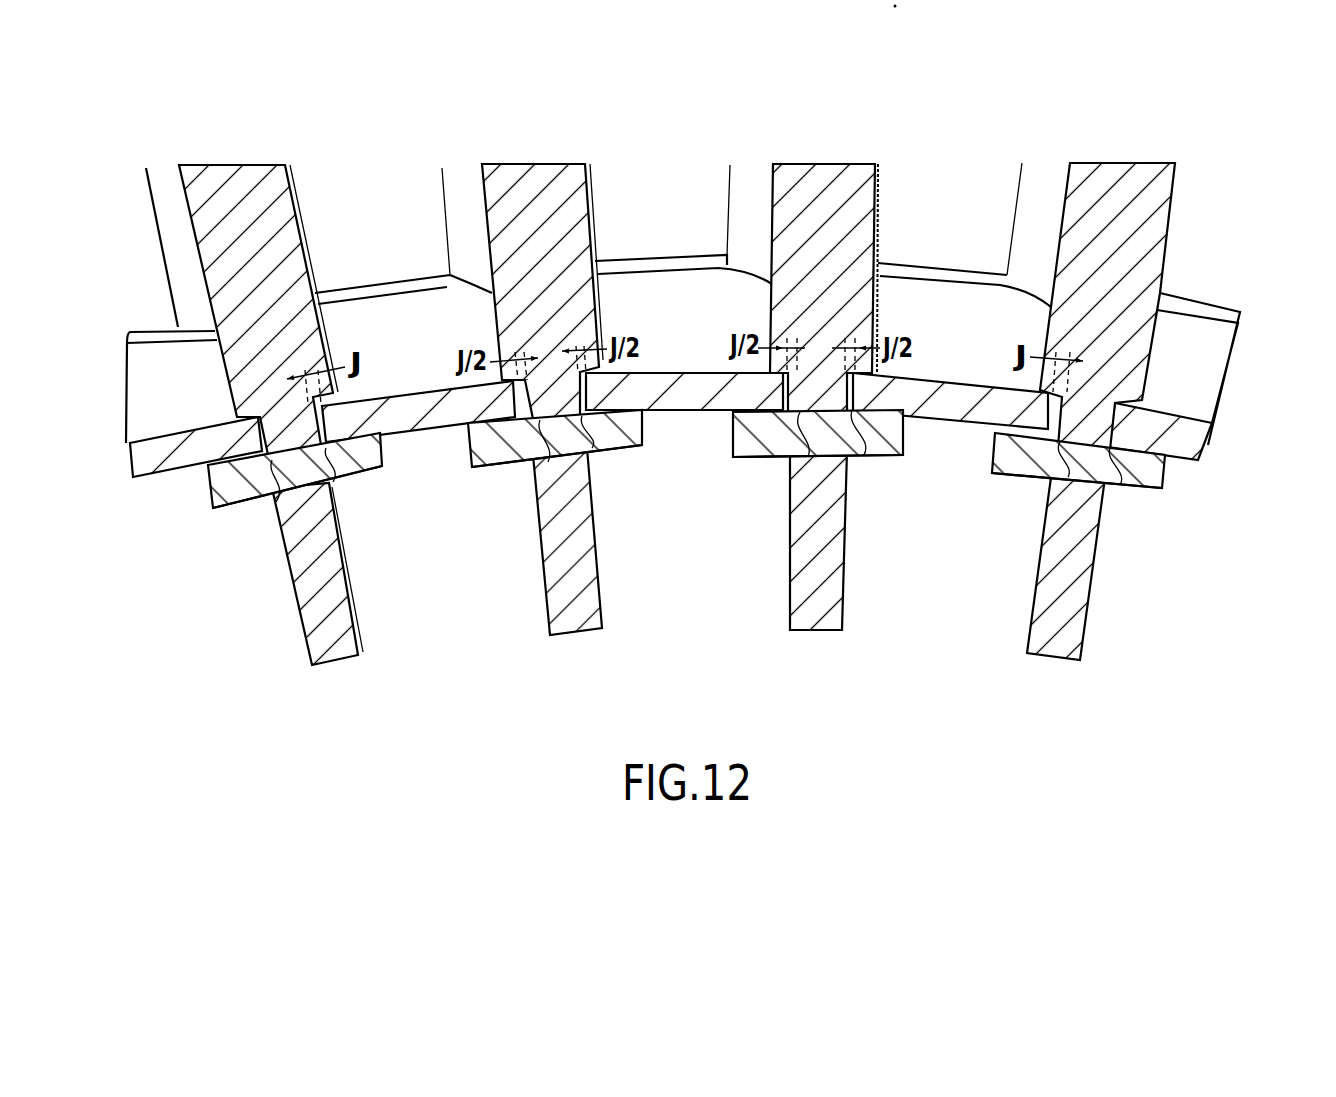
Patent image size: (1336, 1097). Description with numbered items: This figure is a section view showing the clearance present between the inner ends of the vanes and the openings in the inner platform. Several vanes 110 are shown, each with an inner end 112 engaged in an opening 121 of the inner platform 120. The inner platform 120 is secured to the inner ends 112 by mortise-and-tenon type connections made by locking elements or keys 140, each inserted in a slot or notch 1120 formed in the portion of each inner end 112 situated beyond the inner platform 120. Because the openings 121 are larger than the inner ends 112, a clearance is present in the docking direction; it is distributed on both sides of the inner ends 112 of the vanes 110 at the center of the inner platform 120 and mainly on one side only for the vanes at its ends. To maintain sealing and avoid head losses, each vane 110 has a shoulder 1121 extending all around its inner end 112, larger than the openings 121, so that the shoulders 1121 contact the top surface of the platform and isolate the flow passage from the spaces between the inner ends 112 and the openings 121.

The vane 110 is at (457, 195).
The inner end 112 is at (343, 650).
The slot or notch 1120 is at (248, 480).
The shoulder 1121 is at (325, 408).
The inner platform 120 is at (1238, 308).
The opening 121 is at (360, 467).
The locking element or key 140 is at (222, 493).